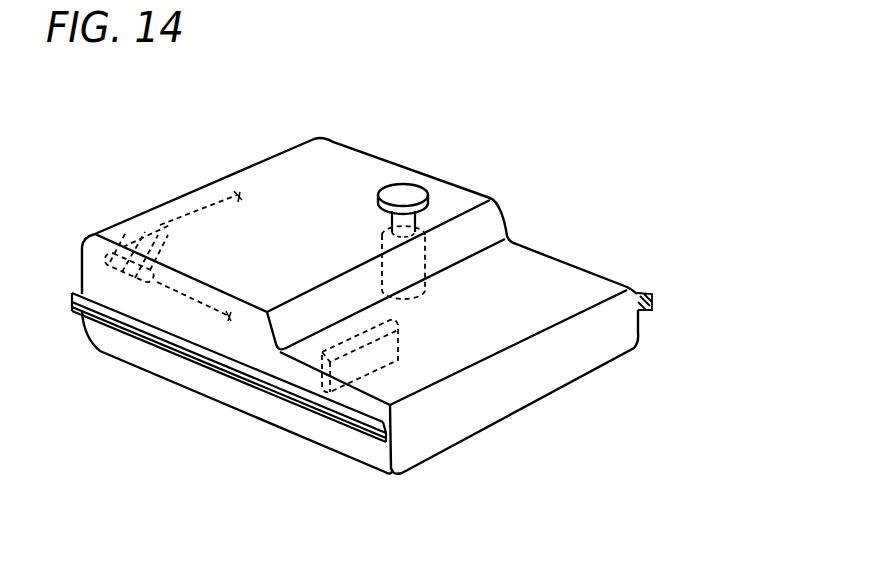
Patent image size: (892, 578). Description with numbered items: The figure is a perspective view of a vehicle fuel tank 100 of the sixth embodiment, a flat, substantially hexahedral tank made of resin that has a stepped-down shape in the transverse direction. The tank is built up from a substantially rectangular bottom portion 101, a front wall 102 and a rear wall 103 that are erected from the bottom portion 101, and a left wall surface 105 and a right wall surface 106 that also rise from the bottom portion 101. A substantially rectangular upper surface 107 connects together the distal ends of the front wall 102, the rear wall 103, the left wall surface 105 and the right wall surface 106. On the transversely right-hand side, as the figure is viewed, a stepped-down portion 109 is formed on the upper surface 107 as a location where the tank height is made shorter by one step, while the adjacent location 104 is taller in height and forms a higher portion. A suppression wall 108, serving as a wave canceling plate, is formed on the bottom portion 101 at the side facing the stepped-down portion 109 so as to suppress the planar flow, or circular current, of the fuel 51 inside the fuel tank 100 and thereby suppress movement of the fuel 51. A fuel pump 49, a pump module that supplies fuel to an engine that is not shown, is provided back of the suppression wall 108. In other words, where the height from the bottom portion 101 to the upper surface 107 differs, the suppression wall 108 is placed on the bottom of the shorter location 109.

The vehicle fuel tank 100 is at (81, 162).
The fuel pump 49 is at (403, 194).
The fuel 51 is at (153, 232).
The bottom portion 101 is at (570, 387).
The front wall 102 is at (160, 369).
The rear wall 103 is at (642, 332).
The location taller in height 104 is at (461, 202).
The left wall surface 105 is at (502, 403).
The right wall surface 106 is at (208, 186).
The upper surface 107 is at (613, 153).
The suppression wall 108 is at (338, 347).
The stepped-down portion 109 is at (545, 275).